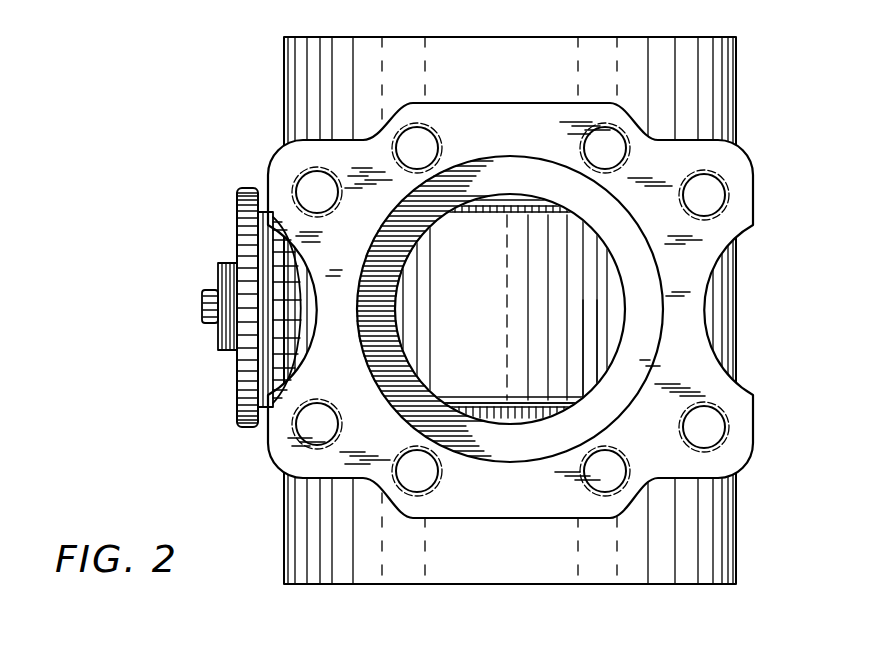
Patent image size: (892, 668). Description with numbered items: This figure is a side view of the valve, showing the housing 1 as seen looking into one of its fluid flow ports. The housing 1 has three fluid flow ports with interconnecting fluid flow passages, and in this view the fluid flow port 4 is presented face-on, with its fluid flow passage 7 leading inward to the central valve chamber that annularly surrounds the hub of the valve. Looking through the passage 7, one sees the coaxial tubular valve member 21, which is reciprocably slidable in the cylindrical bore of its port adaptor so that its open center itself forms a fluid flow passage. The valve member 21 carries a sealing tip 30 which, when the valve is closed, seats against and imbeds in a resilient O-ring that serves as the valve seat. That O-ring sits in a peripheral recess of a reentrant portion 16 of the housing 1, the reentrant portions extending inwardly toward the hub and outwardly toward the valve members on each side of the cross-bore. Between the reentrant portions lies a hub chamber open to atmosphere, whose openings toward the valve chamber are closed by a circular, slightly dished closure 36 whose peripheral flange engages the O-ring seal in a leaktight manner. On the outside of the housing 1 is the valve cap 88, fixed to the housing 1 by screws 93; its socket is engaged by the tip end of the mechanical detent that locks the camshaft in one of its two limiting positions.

The housing 1 is at (718, 303).
The fluid flow port 4 is at (597, 249).
The fluid flow passage 7 is at (503, 324).
The reentrant portion 16 is at (562, 380).
The tubular valve member 21 is at (536, 420).
The sealing tip 30 is at (503, 412).
The closure 36 is at (505, 195).
The valve cap 88 is at (240, 205).
The screws 93 is at (204, 305).